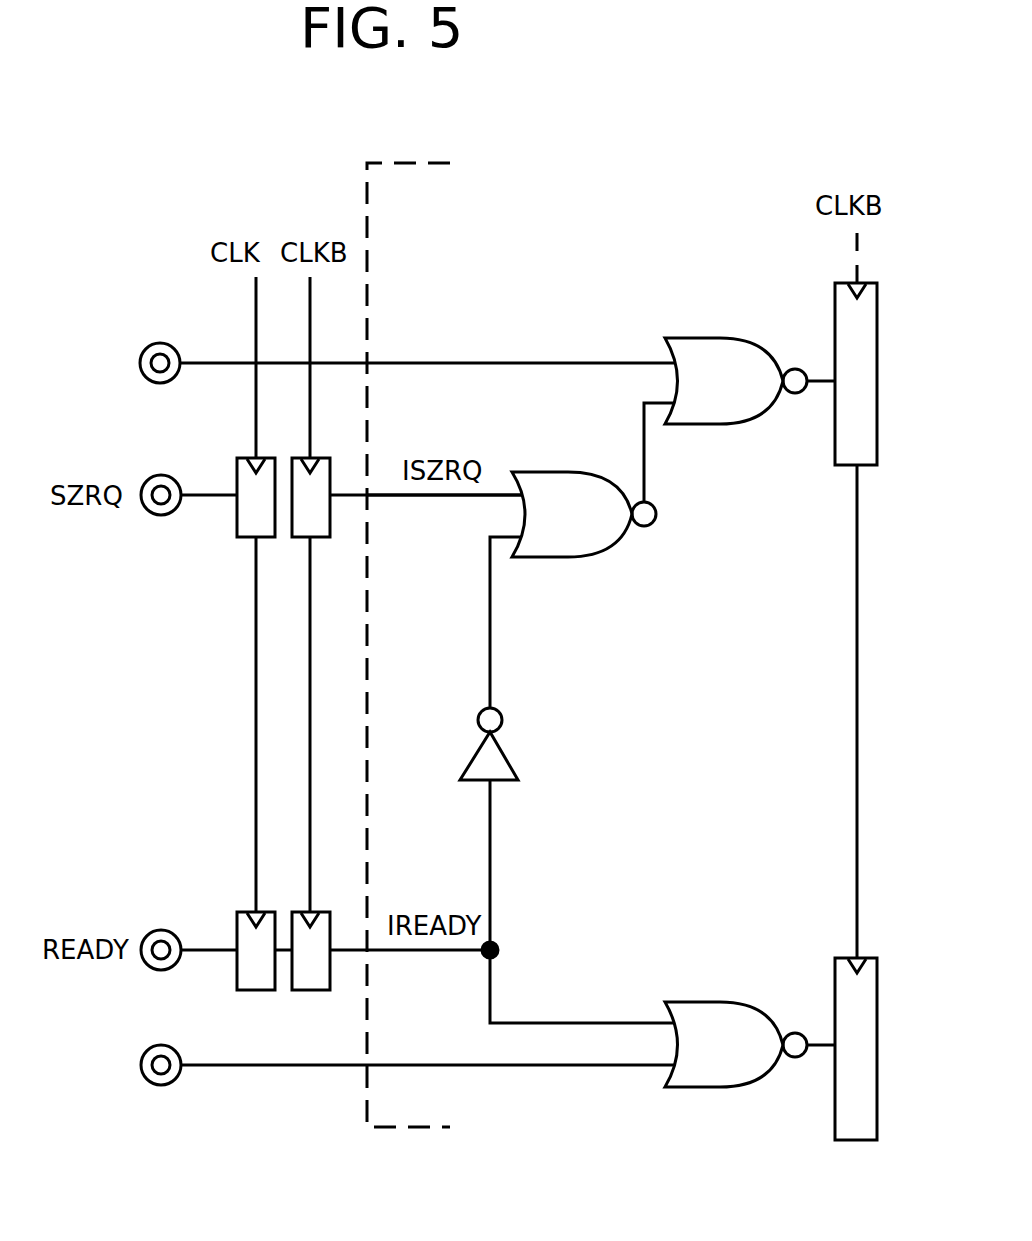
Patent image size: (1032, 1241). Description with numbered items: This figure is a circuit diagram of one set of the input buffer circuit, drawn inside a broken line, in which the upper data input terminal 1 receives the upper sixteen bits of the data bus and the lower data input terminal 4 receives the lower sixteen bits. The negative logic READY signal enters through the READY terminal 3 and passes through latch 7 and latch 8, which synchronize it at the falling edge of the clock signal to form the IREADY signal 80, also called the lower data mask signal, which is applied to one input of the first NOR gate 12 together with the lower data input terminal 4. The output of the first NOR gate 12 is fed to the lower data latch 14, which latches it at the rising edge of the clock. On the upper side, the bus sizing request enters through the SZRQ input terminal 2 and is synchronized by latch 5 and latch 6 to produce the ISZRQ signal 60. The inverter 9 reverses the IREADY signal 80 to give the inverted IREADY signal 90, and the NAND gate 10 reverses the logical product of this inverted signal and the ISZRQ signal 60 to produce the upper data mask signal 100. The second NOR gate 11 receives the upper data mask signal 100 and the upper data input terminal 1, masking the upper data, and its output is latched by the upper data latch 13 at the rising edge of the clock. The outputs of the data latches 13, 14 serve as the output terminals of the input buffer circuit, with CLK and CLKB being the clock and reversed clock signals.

The upper data input terminal 1 is at (180, 383).
The SZRQ input terminal 2 is at (182, 513).
The READY terminal 3 is at (182, 968).
The lower data input terminal 4 is at (175, 1082).
The latch 5 is at (246, 538).
The latch 6 is at (331, 525).
The latch 7 is at (248, 991).
The latch 8 is at (316, 991).
The inverter 9 is at (508, 762).
The NAND gate 10 is at (578, 559).
The second NOR gate 11 is at (735, 426).
The first NOR gate 12 is at (718, 1000).
The upper data latch 13 is at (833, 432).
The lower data latch 14 is at (833, 1088).
The ISZRQ signal 60 is at (457, 497).
The IREADY signal 80 is at (455, 952).
The inverted IREADY signal 90 is at (488, 580).
The upper data mask signal 100 is at (633, 495).